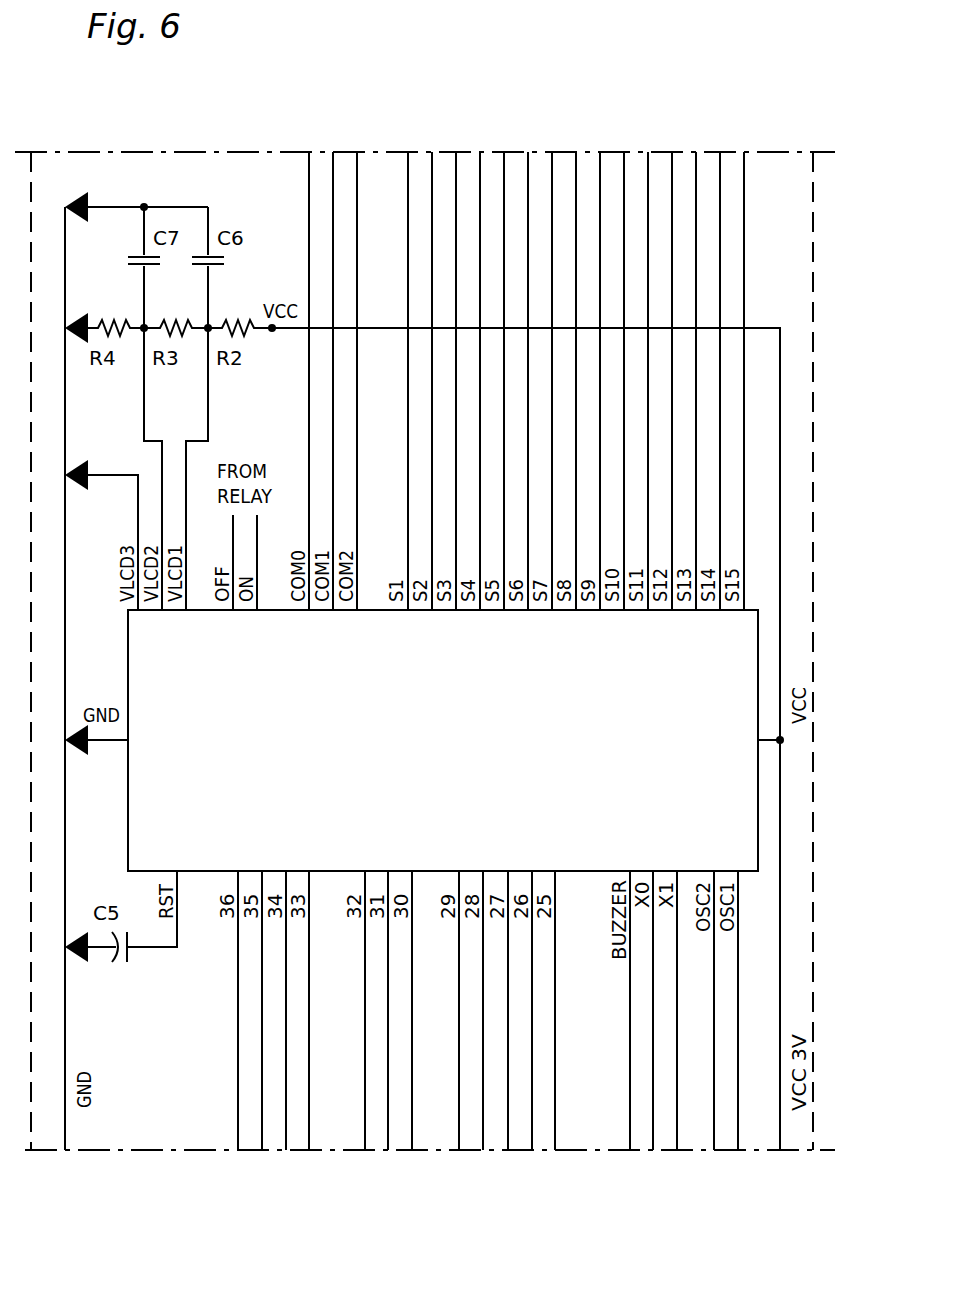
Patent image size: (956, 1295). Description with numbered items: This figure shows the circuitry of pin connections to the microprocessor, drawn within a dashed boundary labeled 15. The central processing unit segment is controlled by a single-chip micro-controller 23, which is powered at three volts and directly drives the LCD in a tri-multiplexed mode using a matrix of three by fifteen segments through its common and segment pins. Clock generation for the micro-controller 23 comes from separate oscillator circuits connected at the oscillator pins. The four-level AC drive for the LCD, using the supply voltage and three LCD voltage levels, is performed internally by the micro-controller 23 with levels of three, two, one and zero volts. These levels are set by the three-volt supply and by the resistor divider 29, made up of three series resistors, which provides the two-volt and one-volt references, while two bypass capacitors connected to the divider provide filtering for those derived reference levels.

The controller circuit board 15 is at (770, 172).
The single-chip micro-controller 23 is at (350, 718).
The resistor divider 29 is at (144, 207).